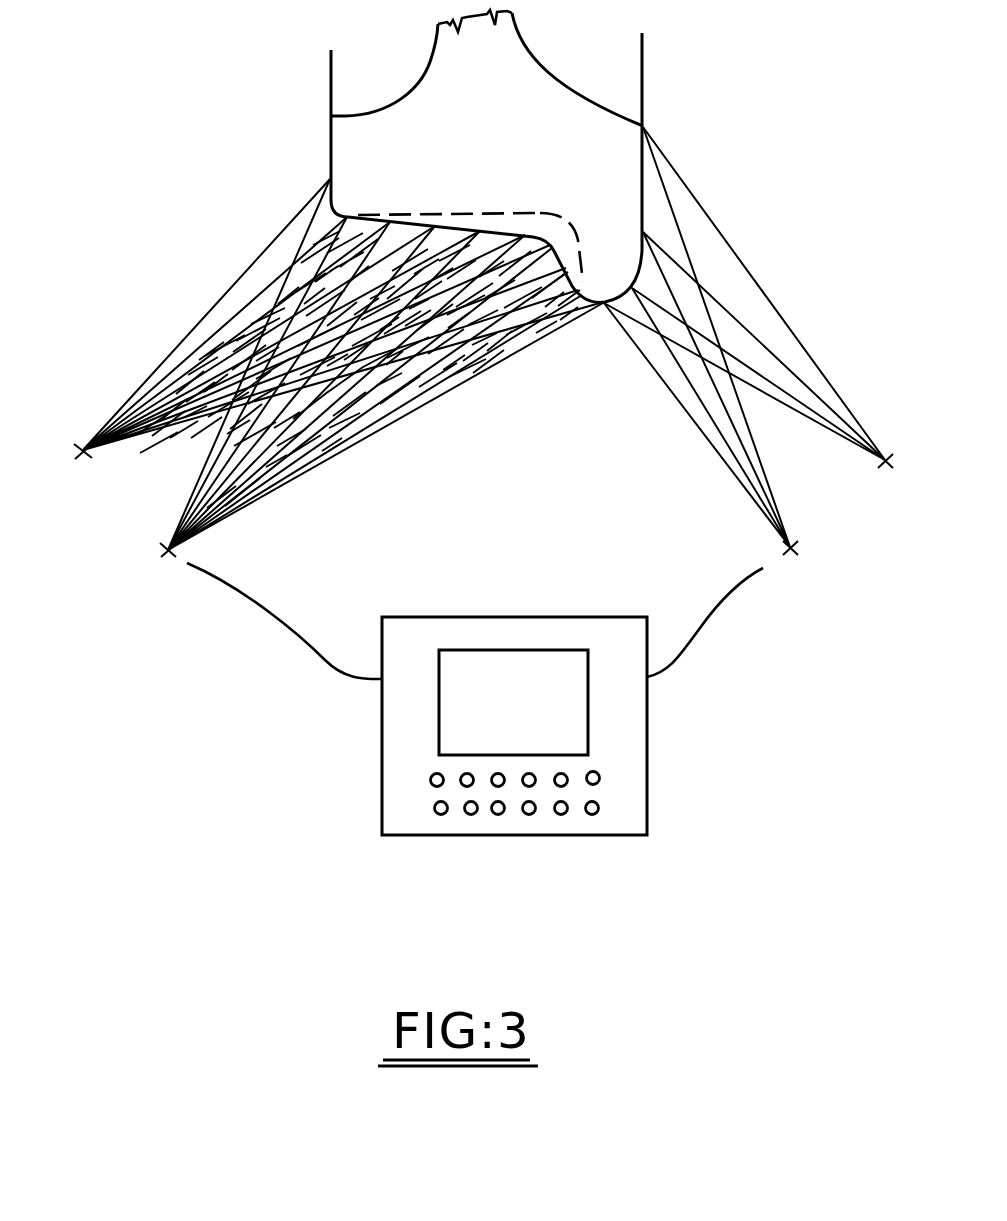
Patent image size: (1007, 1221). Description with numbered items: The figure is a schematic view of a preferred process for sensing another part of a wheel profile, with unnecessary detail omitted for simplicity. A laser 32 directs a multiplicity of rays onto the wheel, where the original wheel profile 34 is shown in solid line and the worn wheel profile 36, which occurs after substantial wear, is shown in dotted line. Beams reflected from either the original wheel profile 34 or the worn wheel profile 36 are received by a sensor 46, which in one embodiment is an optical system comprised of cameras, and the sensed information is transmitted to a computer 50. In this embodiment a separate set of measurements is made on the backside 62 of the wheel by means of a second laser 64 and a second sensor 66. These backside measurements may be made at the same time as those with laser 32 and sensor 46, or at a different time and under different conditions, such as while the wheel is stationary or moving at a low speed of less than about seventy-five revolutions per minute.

The laser 32 is at (80, 458).
The original wheel profile 34 is at (393, 214).
The worn wheel profile 36 is at (513, 213).
The sensor 46 is at (160, 553).
The computer 50 is at (594, 617).
The backside of the wheel 62 is at (644, 90).
The laser 64 is at (888, 470).
The sensor 66 is at (796, 556).